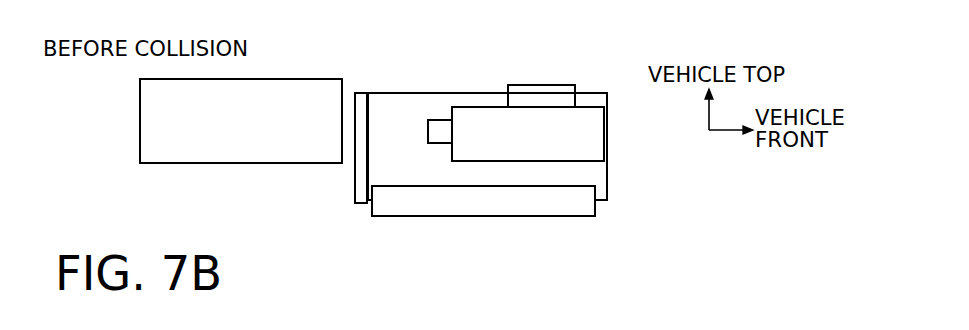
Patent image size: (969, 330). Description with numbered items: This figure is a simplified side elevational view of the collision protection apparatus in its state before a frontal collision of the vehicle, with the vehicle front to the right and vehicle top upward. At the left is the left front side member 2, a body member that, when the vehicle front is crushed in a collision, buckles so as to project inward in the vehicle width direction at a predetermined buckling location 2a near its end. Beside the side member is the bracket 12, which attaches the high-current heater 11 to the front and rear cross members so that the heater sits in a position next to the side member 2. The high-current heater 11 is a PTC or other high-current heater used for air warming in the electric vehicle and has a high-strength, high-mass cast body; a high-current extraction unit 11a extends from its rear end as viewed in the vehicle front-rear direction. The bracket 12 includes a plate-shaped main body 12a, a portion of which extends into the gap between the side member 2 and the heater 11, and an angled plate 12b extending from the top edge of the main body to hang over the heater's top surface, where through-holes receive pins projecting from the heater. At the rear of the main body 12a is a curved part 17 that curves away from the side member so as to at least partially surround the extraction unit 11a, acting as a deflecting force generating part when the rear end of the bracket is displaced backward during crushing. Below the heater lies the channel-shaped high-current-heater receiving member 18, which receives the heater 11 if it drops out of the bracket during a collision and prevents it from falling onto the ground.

The left front side member 2 is at (217, 162).
The predetermined buckling location 2a is at (345, 85).
The curved part 17 is at (367, 172).
The bracket 12 is at (438, 92).
The angled plate 12b is at (540, 85).
The high-current heater 11 is at (590, 105).
The high-current extraction unit 11a is at (438, 137).
The high-current-heater receiving member 18 is at (539, 197).
The plate-shaped main body 12a is at (595, 174).